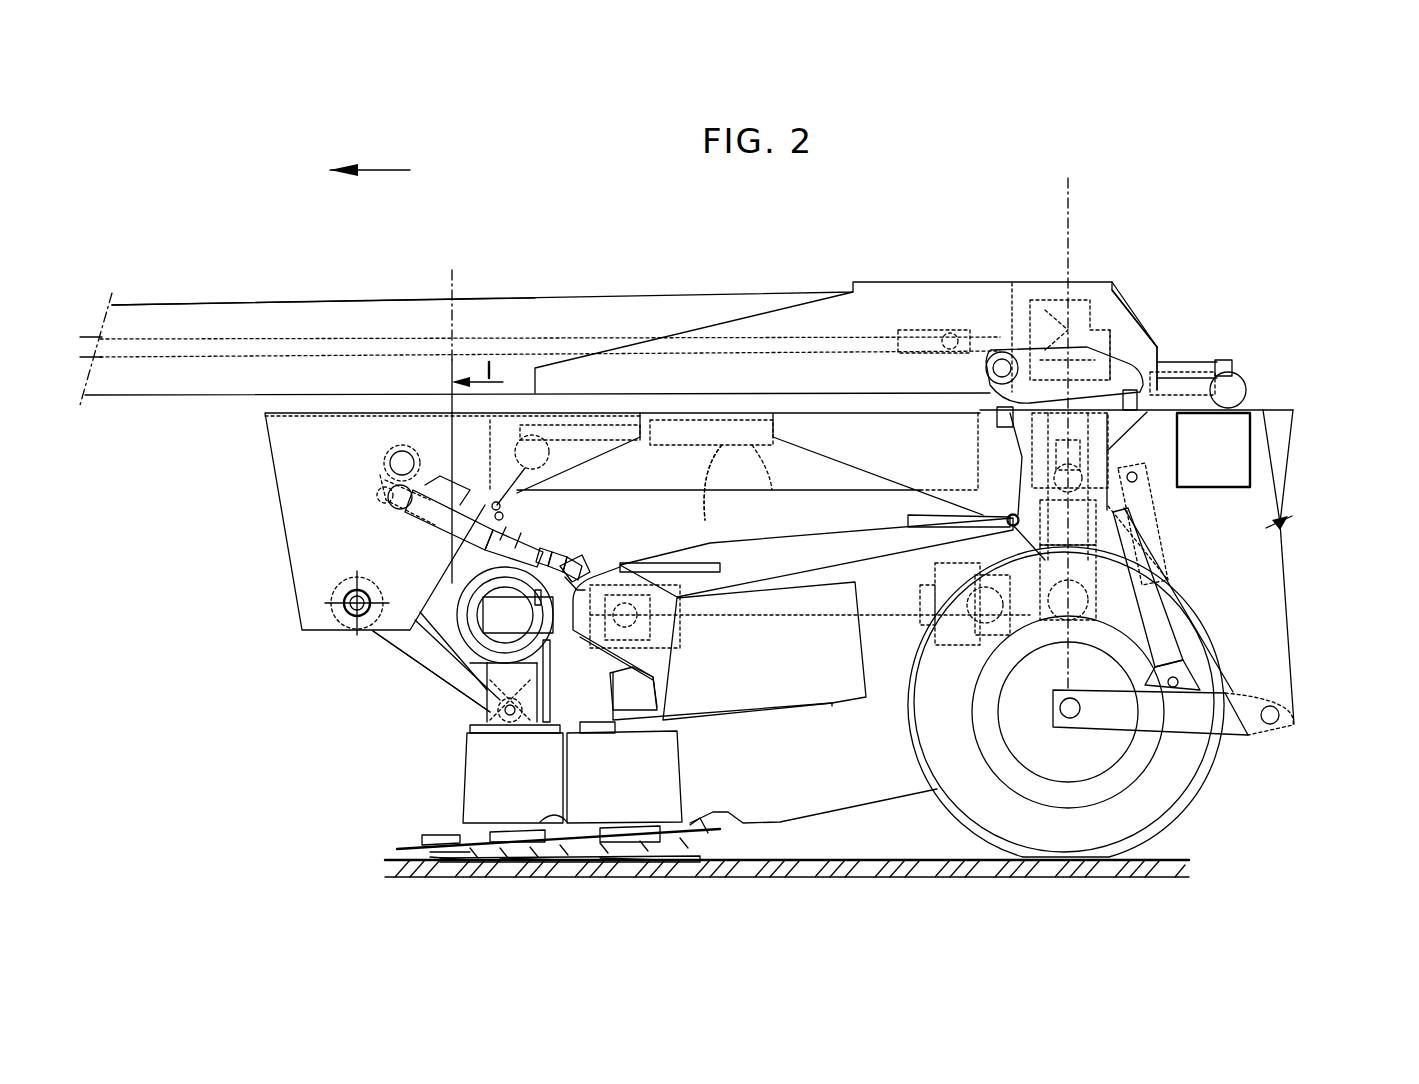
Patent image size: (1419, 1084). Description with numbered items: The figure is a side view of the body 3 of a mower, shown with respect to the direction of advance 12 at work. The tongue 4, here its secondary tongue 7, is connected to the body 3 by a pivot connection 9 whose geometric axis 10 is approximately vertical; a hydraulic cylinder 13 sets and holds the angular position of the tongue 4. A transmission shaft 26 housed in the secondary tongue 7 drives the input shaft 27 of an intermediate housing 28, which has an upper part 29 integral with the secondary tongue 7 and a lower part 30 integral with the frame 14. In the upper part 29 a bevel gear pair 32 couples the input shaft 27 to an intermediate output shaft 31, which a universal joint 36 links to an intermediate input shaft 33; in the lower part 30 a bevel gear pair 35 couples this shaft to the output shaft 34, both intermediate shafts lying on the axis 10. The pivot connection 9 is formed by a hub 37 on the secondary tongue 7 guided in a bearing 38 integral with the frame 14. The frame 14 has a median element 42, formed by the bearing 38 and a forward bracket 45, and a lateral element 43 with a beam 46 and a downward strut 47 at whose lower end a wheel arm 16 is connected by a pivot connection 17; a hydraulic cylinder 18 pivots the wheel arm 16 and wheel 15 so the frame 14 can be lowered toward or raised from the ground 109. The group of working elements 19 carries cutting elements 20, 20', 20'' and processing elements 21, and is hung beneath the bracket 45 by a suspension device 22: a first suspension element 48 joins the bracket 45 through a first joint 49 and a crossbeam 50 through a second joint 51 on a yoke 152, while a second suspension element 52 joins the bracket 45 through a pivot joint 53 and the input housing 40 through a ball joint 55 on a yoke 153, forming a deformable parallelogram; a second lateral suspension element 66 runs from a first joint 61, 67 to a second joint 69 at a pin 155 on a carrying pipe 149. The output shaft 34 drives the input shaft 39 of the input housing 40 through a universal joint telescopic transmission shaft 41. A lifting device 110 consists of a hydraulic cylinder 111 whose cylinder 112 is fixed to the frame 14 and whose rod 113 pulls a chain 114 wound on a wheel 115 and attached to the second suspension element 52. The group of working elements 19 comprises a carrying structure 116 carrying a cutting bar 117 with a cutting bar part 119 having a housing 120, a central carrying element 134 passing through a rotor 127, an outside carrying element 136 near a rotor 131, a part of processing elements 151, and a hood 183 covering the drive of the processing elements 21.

The body 3 is at (308, 651).
The tongue 4 is at (212, 303).
The secondary tongue 7 is at (345, 310).
The pivot connection 9 is at (1132, 303).
The geometric axis 10 is at (1070, 200).
The direction of advance 12 is at (386, 170).
The hydraulic cylinder 13 is at (1240, 380).
The frame 14 is at (1298, 410).
The wheel 15 is at (1205, 790).
The wheel arm 16 is at (1180, 732).
The pivot connection 17 is at (1277, 722).
The hydraulic cylinder 18 is at (1170, 630).
The group of working elements 19 is at (452, 750).
The cutting element 20 is at (558, 829).
The cutting element 20' is at (579, 826).
The cutting element 20'' is at (644, 818).
The processing elements 21 is at (824, 810).
The suspension device 22 is at (422, 676).
The transmission shaft 26 is at (452, 330).
The input shaft 27 is at (1012, 330).
The intermediate housing 28 is at (1112, 337).
The upper part 29 is at (1122, 290).
The lower part 30 is at (1068, 640).
The intermediate output shaft 31 is at (1025, 440).
The bevel gear pair 32 is at (1068, 355).
The intermediate input shaft 33 is at (1140, 550).
The output shaft 34 is at (1008, 580).
The bevel gear pair 35 is at (1060, 590).
The universal joint 36 is at (1100, 452).
The hub 37 is at (1130, 365).
The bearing 38 is at (1108, 506).
The input shaft 39 is at (578, 640).
The input housing 40 is at (470, 600).
The universal joint telescopic transmission shaft 41 is at (800, 615).
The median element 42 is at (262, 430).
The lateral element 43 is at (1285, 522).
The bracket 45 is at (667, 485).
The beam 46 is at (1250, 440).
The strut 47 is at (1284, 575).
The first suspension element 48 is at (448, 672).
The first joint 49 is at (347, 594).
The crossbeam 50 is at (620, 685).
The second joint 51 is at (520, 725).
The second suspension element 52 is at (520, 540).
The first joint 53 is at (400, 452).
The second joint 55 is at (572, 560).
The first joint 61 is at (412, 452).
The second lateral suspension element 66 is at (438, 528).
The first joint 67 is at (388, 462).
The second joint 69 is at (584, 555).
The ground 109 is at (904, 860).
The lifting device 110 is at (728, 448).
The hydraulic cylinder 111 is at (765, 470).
The cylinder 112 is at (706, 490).
The rod 113 is at (612, 440).
The chain 114 is at (493, 500).
The wheel 115 is at (515, 447).
The carrying structure 116 is at (485, 633).
The cutting bar 117 is at (435, 865).
The cutting bar part 119 is at (510, 864).
The housing 120 is at (590, 862).
The rotor 127 is at (470, 770).
The rotor 131 is at (670, 768).
The central carrying element 134 is at (497, 700).
The outside carrying element 136 is at (595, 725).
The carrying pipe 149 is at (518, 611).
The part of processing elements 151 is at (835, 772).
The yoke 152 is at (538, 705).
The yoke 153 is at (537, 560).
The pin 155 is at (560, 552).
The hood 183 is at (740, 708).